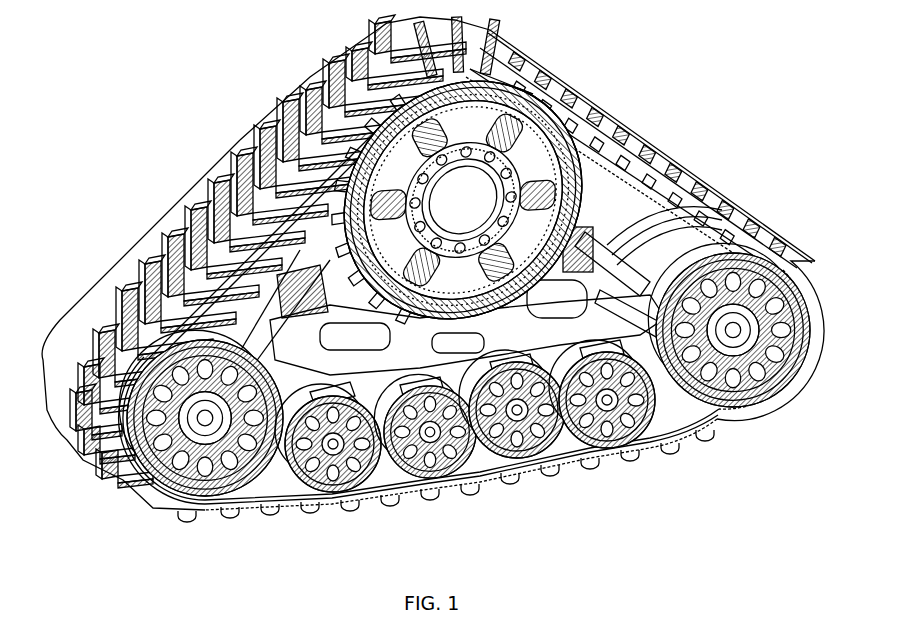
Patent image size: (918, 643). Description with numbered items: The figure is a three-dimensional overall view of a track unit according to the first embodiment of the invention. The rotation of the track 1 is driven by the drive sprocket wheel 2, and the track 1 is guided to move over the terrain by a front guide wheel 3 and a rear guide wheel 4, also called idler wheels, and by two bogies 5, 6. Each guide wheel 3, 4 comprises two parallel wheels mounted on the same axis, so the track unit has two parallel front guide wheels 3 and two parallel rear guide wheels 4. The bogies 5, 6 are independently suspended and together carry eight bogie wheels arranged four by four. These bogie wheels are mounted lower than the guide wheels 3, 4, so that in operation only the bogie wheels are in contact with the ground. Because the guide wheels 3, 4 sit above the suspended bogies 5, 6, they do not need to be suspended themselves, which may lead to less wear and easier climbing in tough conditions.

The track 1 is at (663, 155).
The drive sprocket wheel 2 is at (470, 183).
The front guide wheel 3 is at (130, 473).
The rear guide wheel 4 is at (767, 250).
The bogie 5 is at (373, 480).
The bogie 6 is at (560, 445).